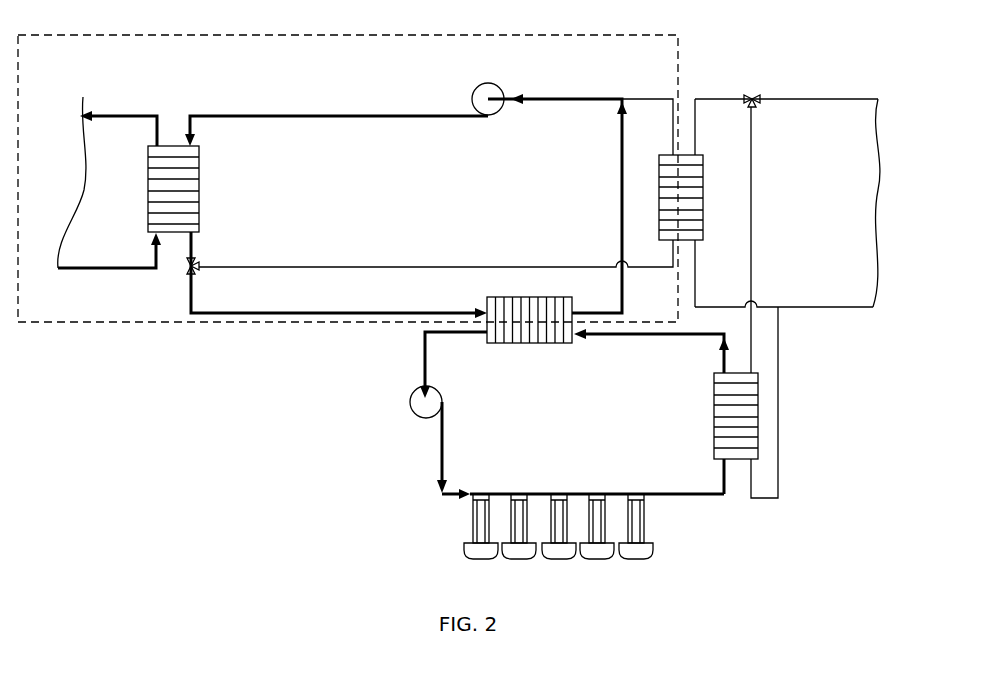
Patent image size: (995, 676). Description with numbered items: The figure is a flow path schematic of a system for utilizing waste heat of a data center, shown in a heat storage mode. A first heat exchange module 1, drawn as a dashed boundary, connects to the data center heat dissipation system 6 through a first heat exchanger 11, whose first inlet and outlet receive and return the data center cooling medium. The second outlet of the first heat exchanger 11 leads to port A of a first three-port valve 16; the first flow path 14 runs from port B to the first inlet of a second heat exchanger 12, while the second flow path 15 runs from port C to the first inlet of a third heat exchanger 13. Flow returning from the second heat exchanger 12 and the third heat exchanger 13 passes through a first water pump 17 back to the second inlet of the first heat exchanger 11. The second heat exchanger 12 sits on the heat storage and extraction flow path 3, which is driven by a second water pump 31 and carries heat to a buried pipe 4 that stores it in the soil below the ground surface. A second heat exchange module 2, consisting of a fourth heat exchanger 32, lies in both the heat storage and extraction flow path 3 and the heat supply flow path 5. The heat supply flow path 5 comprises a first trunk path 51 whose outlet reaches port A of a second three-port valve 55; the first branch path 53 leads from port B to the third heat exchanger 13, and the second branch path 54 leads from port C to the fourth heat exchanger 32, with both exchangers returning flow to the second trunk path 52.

The first heat exchange module 1 is at (421, 33).
The second heat exchange module 2 is at (666, 411).
The fourth heat exchanger 32 is at (714, 425).
The heat storage and extraction flow path 3 is at (424, 360).
The second water pump 31 is at (410, 400).
The buried pipe 4 is at (476, 557).
The heat supply flow path 5 is at (787, 275).
The data center heat dissipation system 6 is at (121, 267).
The first heat exchanger 11 is at (148, 192).
The second heat exchanger 12 is at (528, 297).
The third heat exchanger 13 is at (659, 197).
The first flow path 14 is at (296, 312).
The second flow path 15 is at (296, 266).
The first three-port valve 16 is at (186, 270).
The first water pump 17 is at (474, 89).
The first trunk path 51 is at (798, 99).
The second trunk path 52 is at (800, 307).
The first branch path 53 is at (696, 100).
The second branch path 54 is at (753, 208).
The second three-port valve 55 is at (753, 94).